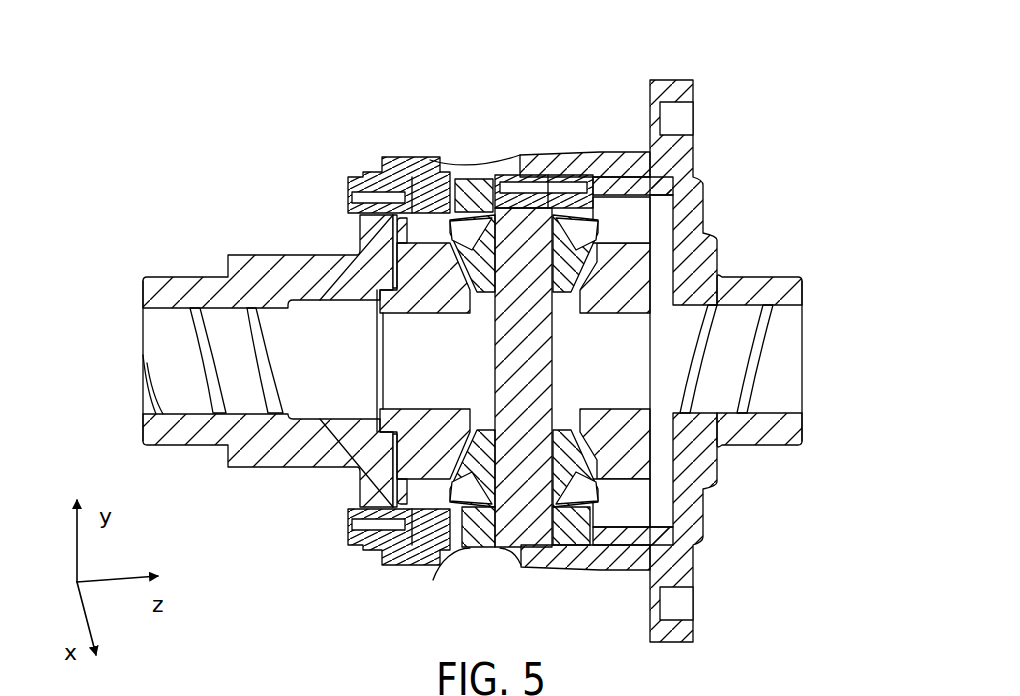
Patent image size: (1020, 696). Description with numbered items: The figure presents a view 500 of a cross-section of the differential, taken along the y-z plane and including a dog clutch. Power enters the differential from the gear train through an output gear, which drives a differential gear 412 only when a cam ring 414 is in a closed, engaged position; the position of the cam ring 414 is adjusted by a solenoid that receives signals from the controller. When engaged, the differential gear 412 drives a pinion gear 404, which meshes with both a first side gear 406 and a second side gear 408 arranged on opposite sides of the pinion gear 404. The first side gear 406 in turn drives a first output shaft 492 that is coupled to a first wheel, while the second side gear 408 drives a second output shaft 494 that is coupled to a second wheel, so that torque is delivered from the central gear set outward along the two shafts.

The view 500 is at (758, 82).
The first output shaft 492 is at (303, 295).
The cam ring 414 is at (423, 190).
The differential gear 412 is at (470, 187).
The pinion gear 404 is at (570, 233).
The second side gear 408 is at (650, 272).
The first side gear 406 is at (378, 472).
The second output shaft 494 is at (750, 450).